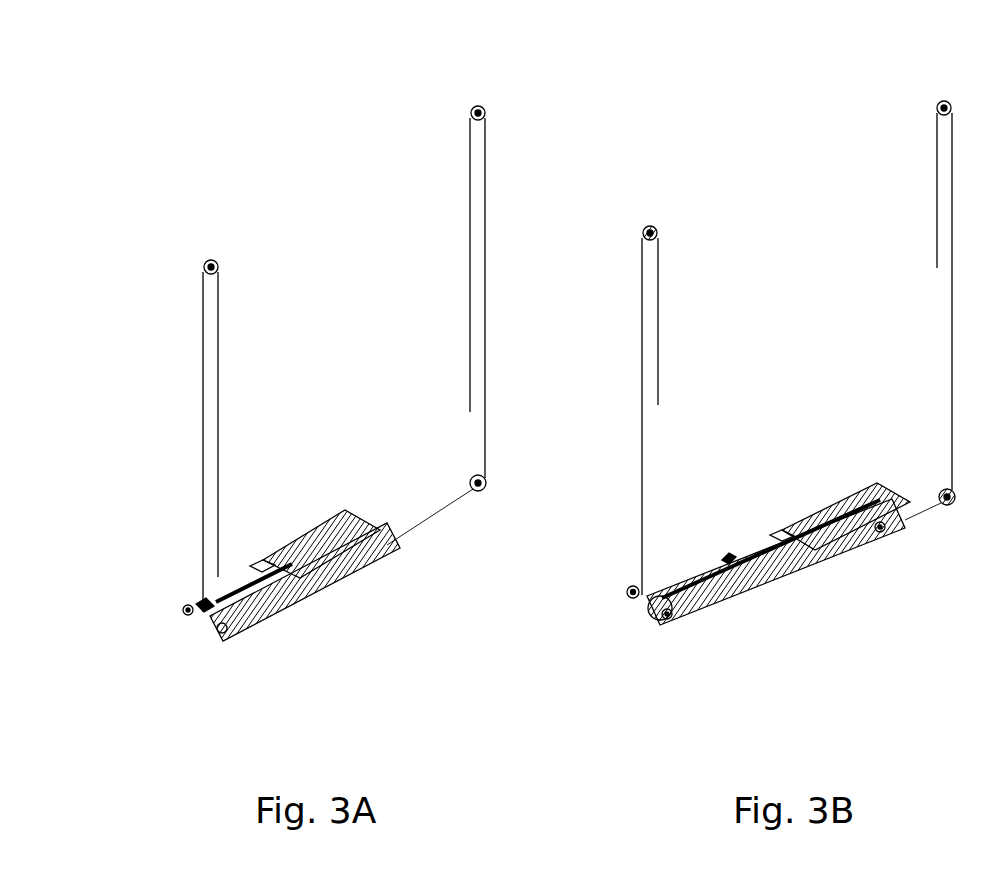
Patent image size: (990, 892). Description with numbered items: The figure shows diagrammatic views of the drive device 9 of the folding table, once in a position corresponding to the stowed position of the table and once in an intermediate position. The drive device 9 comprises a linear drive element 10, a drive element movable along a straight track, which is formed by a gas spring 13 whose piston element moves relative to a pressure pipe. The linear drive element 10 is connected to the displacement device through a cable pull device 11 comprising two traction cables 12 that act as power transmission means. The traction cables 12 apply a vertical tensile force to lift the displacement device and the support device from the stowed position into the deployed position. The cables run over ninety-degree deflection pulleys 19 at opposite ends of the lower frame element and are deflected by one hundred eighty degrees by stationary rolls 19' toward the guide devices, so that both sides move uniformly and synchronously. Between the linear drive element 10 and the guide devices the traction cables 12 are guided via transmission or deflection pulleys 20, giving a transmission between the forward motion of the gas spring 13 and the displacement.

In FIG. 3B, the drive device 9 is at (715, 156).
In FIG. 3A, the linear drive element 10 is at (266, 527).
In FIG. 3A, the cable pull device 11 is at (301, 612).
In FIG. 3A, the traction cables 12 is at (451, 332).
In FIG. 3B, the gas spring 13 is at (723, 514).
In FIG. 3A, the 90° deflection pulleys 19 is at (463, 544).
In FIG. 3B, the 90° deflection pulleys 19 is at (591, 598).
In FIG. 3A, the stationary rolls 19' is at (344, 201).
In FIG. 3B, the transmission or deflection pulleys 20 is at (691, 630).